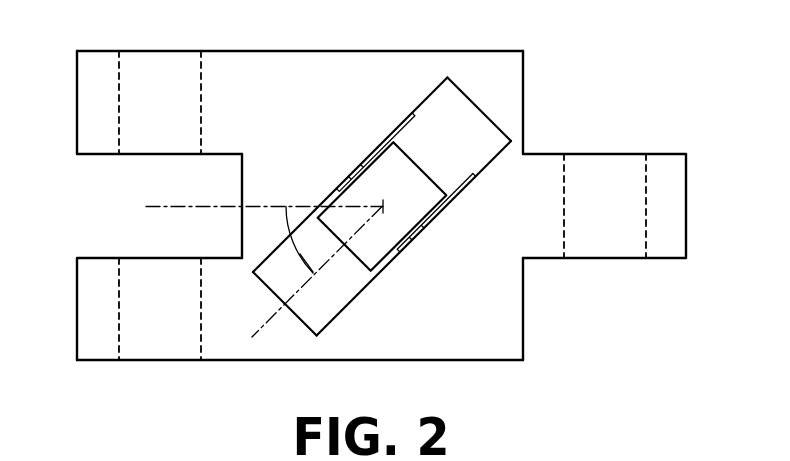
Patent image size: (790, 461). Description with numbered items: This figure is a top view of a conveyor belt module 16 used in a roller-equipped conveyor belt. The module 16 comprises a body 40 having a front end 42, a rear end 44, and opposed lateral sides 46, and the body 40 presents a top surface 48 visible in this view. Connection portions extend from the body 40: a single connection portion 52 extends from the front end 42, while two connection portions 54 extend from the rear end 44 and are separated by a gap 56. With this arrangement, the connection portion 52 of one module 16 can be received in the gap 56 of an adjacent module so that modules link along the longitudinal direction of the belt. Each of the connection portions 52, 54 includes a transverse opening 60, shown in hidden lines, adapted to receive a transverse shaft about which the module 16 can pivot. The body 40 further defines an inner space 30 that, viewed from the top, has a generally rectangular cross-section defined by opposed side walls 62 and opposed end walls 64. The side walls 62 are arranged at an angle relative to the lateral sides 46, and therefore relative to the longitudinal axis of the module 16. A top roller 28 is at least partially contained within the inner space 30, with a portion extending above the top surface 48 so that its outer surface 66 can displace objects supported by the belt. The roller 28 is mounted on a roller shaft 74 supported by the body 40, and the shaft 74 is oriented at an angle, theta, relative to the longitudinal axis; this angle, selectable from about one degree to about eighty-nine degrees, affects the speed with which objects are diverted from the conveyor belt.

The conveyor belt module 16 is at (721, 70).
The top roller 28 is at (348, 199).
The inner space 30 is at (337, 292).
The body 40 is at (323, 69).
The front end 42 is at (560, 277).
The rear end 44 is at (216, 238).
The lateral sides 46 is at (464, 47).
The top surface 48 is at (303, 128).
The connection portion 52 is at (666, 180).
The connection portions 54 is at (79, 70).
The gap 56 is at (112, 212).
The transverse opening 60 is at (198, 77).
The side walls 62 is at (411, 116).
The end walls 64 is at (478, 112).
The outer surfaces 66 is at (413, 196).
The roller shaft 74 is at (410, 243).